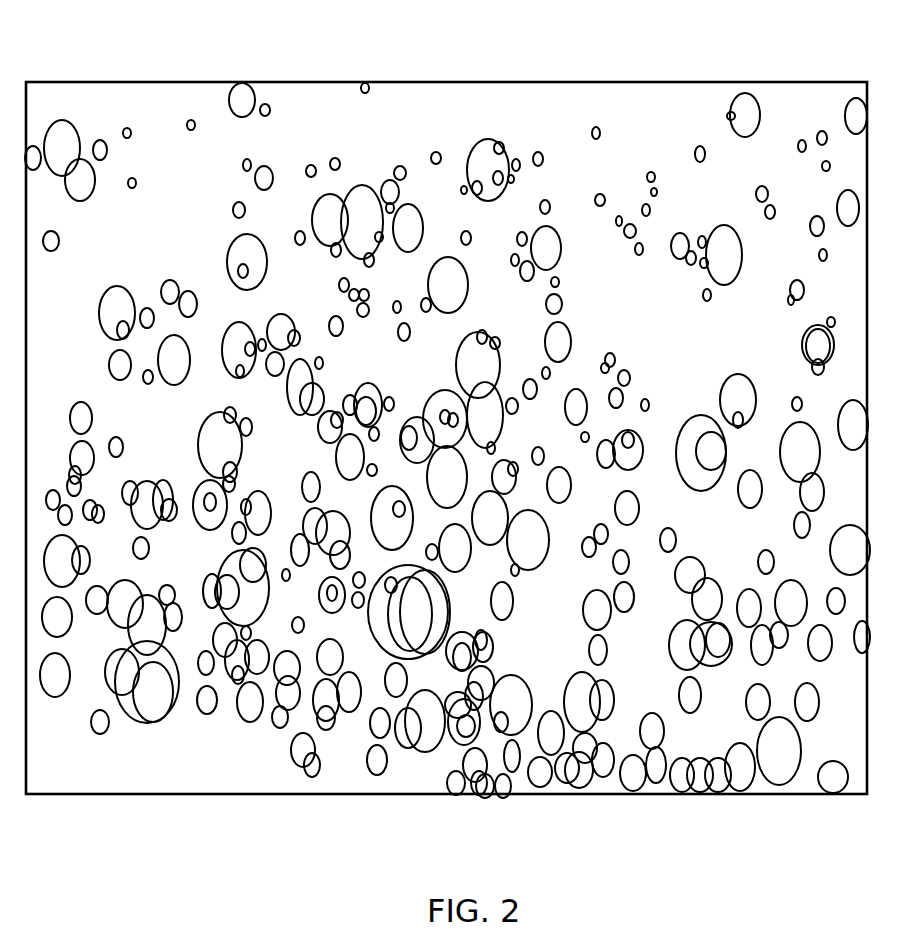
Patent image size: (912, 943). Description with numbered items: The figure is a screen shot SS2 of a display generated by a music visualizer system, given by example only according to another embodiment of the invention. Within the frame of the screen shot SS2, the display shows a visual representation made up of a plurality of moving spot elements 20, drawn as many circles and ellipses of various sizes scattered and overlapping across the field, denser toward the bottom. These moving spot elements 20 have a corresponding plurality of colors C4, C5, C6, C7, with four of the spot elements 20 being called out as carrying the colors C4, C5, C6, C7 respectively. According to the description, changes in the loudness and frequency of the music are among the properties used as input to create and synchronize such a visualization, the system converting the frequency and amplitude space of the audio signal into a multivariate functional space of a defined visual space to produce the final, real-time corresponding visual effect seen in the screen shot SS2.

The moving spot elements 20 is at (447, 476).
The color C4 is at (136, 722).
The color C5 is at (406, 659).
The color C6 is at (597, 777).
The color C7 is at (720, 652).
The screen shot SS2 is at (651, 69).